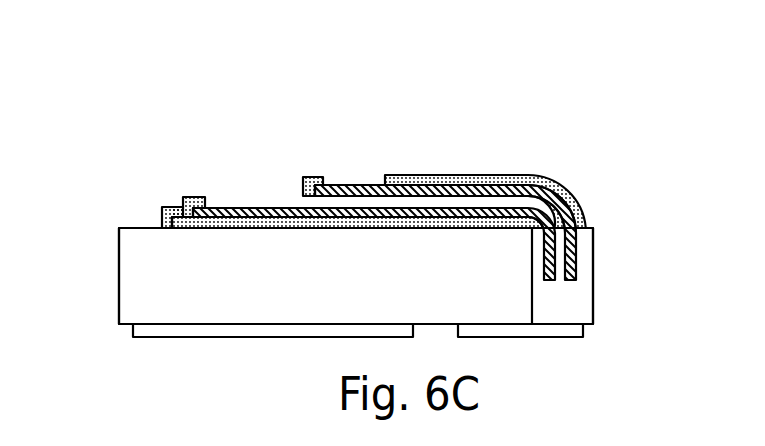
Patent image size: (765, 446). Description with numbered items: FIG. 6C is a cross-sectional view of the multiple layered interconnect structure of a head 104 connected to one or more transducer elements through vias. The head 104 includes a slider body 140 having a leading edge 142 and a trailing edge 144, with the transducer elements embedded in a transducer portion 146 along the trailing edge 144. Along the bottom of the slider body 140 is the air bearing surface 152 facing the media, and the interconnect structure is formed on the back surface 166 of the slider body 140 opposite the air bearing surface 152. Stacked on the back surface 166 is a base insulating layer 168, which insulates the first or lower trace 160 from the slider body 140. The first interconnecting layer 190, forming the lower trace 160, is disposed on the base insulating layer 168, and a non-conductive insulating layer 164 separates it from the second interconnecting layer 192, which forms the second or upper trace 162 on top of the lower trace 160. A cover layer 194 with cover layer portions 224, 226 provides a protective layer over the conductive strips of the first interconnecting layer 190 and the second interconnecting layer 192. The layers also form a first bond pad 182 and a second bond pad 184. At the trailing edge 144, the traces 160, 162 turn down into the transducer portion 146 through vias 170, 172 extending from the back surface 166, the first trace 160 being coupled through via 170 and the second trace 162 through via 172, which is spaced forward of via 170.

The head 104 is at (112, 188).
The slider body 140 is at (258, 293).
The leading edge 142 is at (118, 269).
The trailing edge 144 is at (592, 300).
The transducer portion 146 is at (577, 315).
The air bearing surface 152 is at (170, 346).
The first or lower trace 160 is at (322, 212).
The second or upper trace 162 is at (430, 188).
The insulating layer 164 is at (377, 203).
The back surface 166 is at (154, 227).
The base insulating layer 168 is at (238, 223).
The via 170 is at (543, 258).
The via 172 is at (577, 258).
The first bond pad 182 is at (217, 194).
The second bond pad 184 is at (355, 173).
The first interconnecting layer 190 is at (492, 213).
The second interconnecting layer 192 is at (517, 188).
The cover layer 194 is at (410, 175).
The cover layer portion 224 is at (303, 177).
The cover layer portion 226 is at (452, 175).